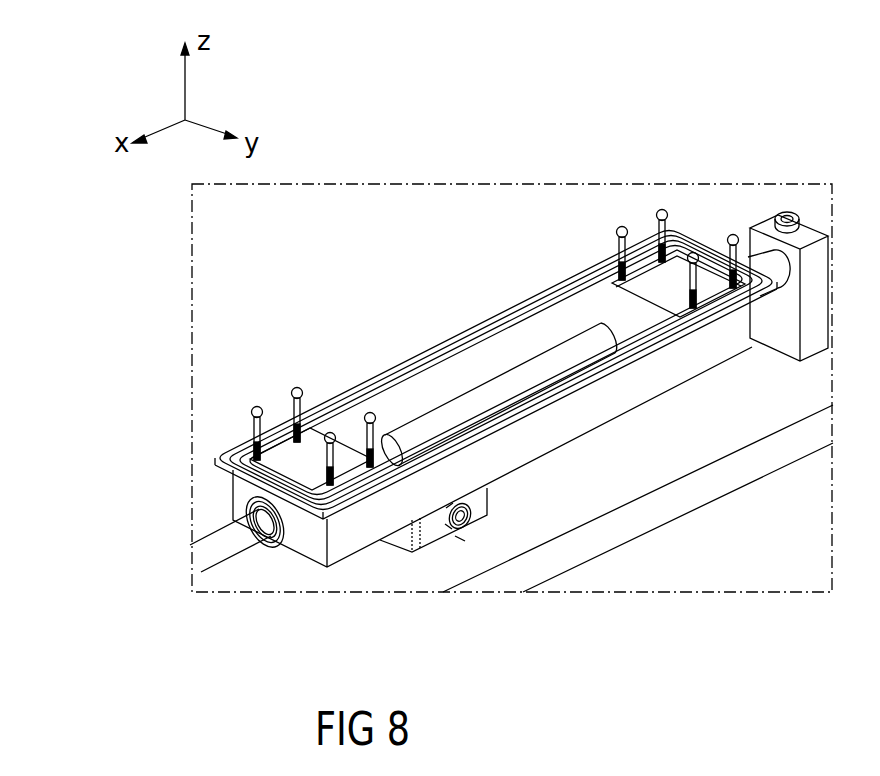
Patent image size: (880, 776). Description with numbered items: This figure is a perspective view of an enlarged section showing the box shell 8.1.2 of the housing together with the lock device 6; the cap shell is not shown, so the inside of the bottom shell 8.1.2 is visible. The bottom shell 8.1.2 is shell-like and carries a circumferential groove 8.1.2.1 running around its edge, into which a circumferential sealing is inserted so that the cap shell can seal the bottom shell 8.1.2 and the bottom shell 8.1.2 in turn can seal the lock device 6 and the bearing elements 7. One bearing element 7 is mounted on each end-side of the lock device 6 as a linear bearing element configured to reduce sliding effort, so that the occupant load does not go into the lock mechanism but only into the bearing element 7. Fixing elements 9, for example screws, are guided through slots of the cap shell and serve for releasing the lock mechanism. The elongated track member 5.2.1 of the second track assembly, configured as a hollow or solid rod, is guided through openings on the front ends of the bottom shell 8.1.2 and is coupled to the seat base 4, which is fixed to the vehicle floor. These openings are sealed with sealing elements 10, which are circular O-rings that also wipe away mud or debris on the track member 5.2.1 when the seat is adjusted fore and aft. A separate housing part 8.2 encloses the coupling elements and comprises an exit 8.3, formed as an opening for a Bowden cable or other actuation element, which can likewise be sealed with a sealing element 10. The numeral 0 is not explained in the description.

The seat base 4 is at (580, 553).
The track member 5.2.1 is at (207, 550).
The lock device 6 is at (490, 383).
The bearing element 7 is at (340, 442).
The bottom shell 8.1.2 is at (350, 556).
The circumferential groove 8.1.2.1 is at (692, 250).
The housing part 8.2 is at (428, 537).
The exit 8.3 is at (466, 540).
The fixing element 9 is at (290, 383).
The sealing element 10 is at (275, 548).
The reference point 0 is at (460, 537).